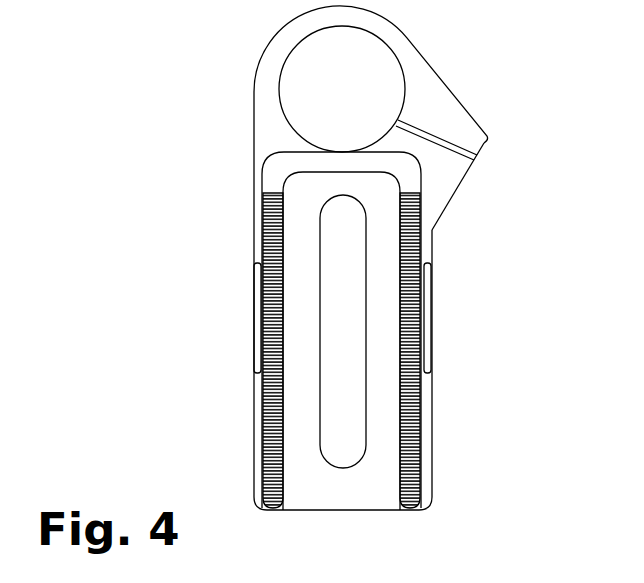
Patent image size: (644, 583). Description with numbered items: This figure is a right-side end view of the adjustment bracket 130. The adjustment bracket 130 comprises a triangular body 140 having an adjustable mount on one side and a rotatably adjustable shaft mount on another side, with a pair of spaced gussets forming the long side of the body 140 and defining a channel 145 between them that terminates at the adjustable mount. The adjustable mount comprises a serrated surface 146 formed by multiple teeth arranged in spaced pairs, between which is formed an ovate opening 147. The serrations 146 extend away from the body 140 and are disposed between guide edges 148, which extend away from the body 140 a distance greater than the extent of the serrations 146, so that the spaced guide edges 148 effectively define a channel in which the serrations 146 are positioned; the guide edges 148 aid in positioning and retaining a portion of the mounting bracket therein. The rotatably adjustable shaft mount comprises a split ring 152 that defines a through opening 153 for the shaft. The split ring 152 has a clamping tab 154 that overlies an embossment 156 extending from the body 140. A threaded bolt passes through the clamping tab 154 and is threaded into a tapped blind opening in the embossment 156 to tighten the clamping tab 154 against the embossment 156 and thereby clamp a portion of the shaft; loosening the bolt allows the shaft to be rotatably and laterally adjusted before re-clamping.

The adjustment bracket 130 is at (138, 113).
The triangular body 140 is at (253, 248).
The channel 145 is at (377, 370).
The serrated surface 146 is at (255, 317).
The ovate opening 147 is at (335, 382).
The guide edges 148 is at (253, 448).
The split ring 152 is at (260, 58).
The through opening 153 is at (358, 107).
The clamping tab 154 is at (487, 140).
The embossment 156 is at (450, 202).